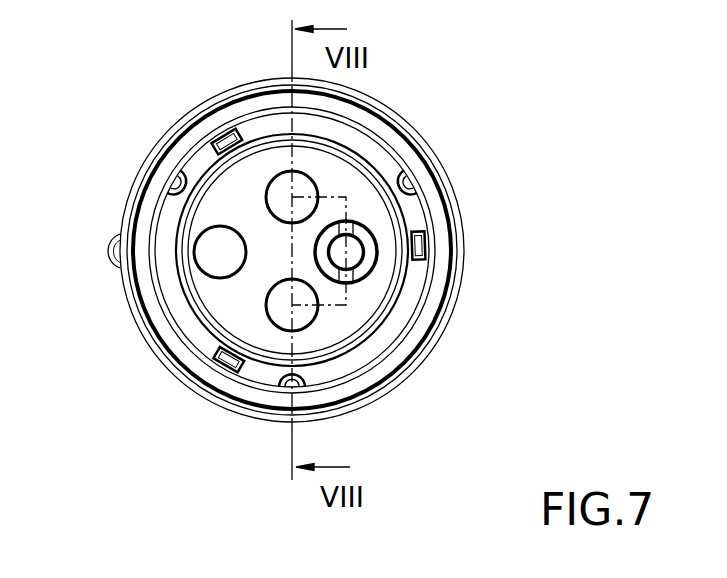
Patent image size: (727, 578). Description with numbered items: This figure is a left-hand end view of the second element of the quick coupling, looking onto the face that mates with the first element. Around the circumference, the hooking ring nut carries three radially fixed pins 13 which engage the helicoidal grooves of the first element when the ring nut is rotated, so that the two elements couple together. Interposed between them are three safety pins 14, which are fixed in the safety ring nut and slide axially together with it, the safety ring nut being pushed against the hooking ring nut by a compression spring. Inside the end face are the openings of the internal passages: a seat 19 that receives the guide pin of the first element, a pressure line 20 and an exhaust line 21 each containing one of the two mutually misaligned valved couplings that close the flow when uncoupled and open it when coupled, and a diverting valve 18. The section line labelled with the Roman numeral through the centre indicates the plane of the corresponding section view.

The radially fixed pin 13 is at (215, 150).
The safety pin 14 is at (178, 188).
The diverting valve 18 is at (350, 255).
The seat 19 is at (217, 250).
The pressure line 20 is at (281, 193).
The exhaust line 21 is at (280, 305).